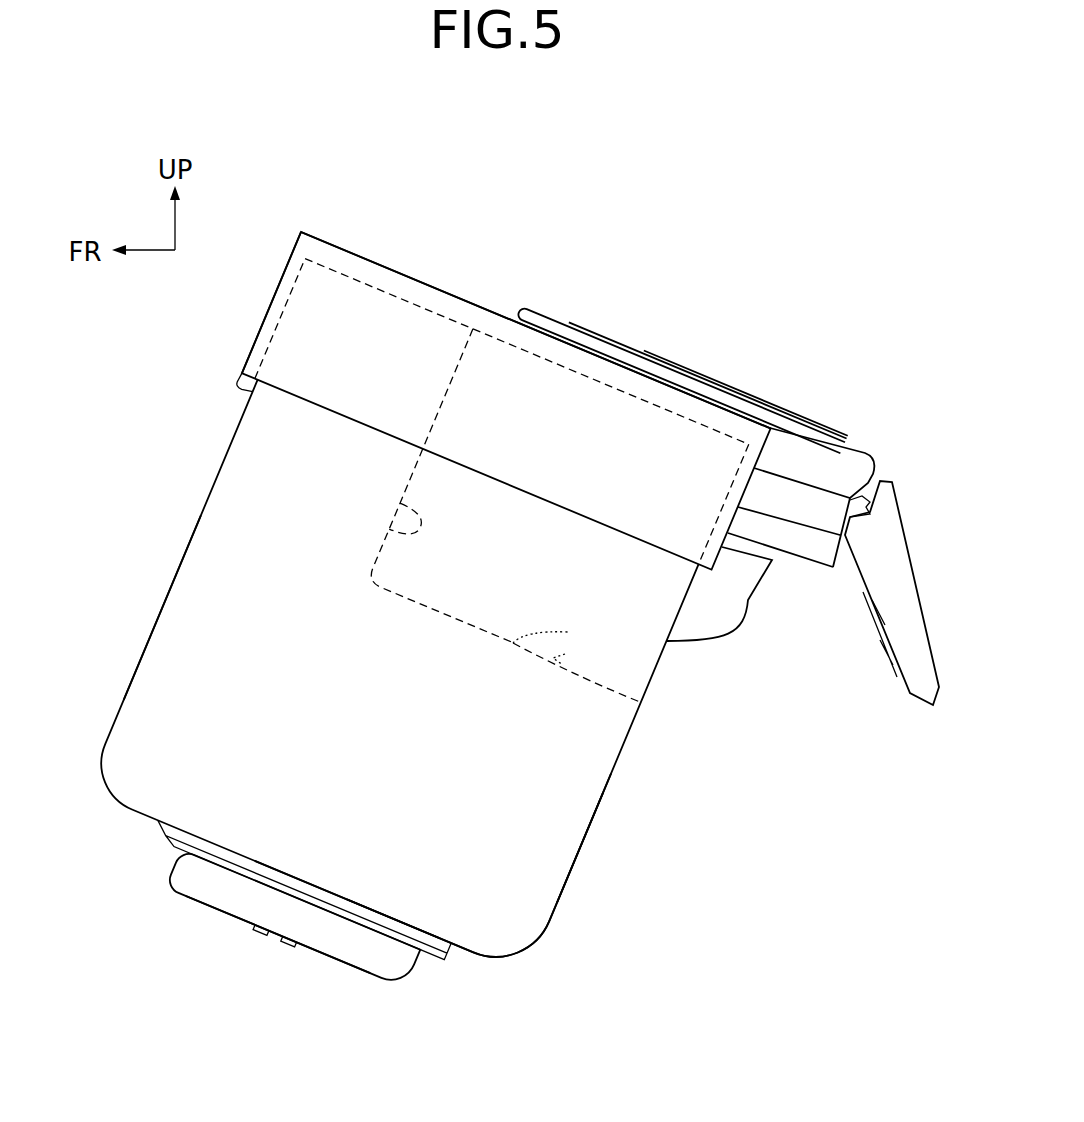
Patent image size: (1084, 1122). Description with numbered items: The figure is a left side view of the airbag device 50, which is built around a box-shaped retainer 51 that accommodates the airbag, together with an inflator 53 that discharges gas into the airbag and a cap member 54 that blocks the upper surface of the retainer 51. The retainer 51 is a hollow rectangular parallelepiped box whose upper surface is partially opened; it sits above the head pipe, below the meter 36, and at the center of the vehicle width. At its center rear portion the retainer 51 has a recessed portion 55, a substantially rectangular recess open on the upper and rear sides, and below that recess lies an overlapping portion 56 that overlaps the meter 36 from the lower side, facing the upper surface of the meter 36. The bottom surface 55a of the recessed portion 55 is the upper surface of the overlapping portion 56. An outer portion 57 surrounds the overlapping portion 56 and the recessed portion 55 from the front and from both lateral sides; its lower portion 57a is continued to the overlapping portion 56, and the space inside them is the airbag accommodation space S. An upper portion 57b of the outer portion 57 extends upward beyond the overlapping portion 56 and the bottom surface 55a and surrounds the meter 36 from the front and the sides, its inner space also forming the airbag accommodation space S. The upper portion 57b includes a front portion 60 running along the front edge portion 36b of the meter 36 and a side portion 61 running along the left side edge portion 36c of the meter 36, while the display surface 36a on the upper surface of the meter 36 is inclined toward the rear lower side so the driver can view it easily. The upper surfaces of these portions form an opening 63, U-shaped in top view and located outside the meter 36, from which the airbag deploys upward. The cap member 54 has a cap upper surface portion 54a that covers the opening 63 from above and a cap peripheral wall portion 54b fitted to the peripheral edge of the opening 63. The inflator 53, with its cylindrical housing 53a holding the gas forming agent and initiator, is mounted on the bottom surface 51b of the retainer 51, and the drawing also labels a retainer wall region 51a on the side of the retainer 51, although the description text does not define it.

The airbag device 50 is at (450, 574).
The cap member 54 is at (460, 362).
The cap upper surface portion 54a is at (486, 306).
The cap peripheral wall portion 54b is at (264, 318).
The opening 63 is at (395, 296).
The front portion 60 is at (256, 345).
The outer portion 57 is at (400, 617).
The lower portion 57a is at (212, 697).
The upper portion 57b is at (397, 527).
The retainer 51 is at (598, 836).
The case side wall 51a is at (578, 866).
The bottom surface 51b is at (462, 951).
The inflator 53 is at (292, 958).
The housing 53a is at (243, 910).
The airbag accommodation space S is at (505, 793).
The recessed portion 55 is at (568, 632).
The bottom surface 55a is at (553, 658).
The overlapping portion 56 is at (640, 702).
The side portion 61 is at (570, 580).
The meter 36 is at (718, 461).
The display surface 36a is at (727, 380).
The front edge portion 36b is at (513, 316).
The side edge portion 36c is at (682, 378).